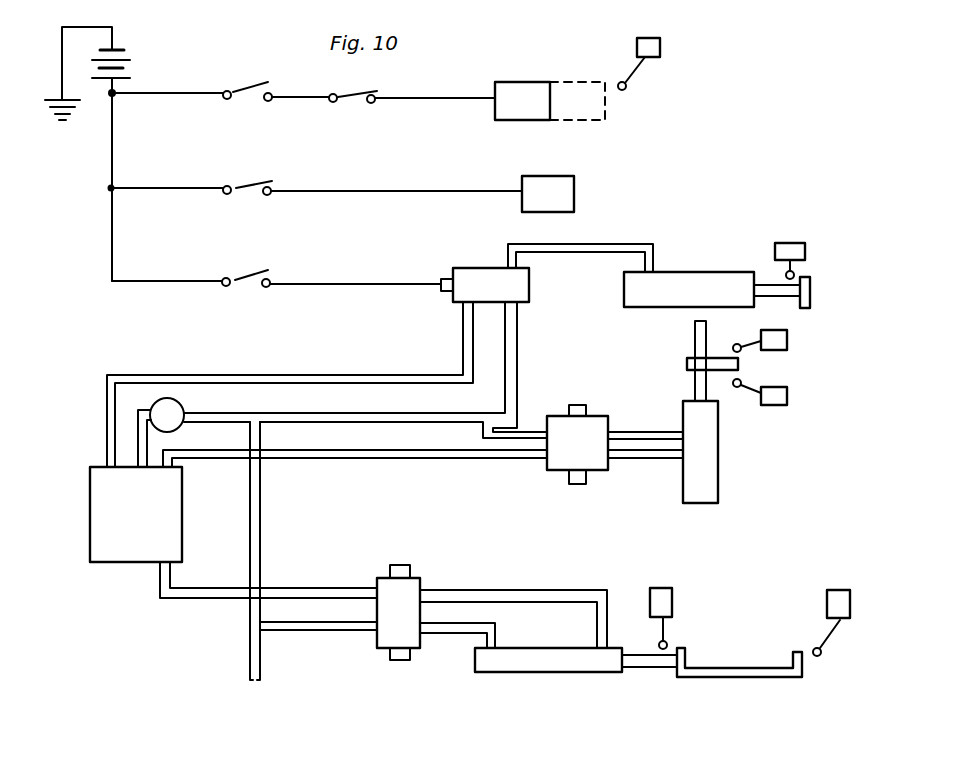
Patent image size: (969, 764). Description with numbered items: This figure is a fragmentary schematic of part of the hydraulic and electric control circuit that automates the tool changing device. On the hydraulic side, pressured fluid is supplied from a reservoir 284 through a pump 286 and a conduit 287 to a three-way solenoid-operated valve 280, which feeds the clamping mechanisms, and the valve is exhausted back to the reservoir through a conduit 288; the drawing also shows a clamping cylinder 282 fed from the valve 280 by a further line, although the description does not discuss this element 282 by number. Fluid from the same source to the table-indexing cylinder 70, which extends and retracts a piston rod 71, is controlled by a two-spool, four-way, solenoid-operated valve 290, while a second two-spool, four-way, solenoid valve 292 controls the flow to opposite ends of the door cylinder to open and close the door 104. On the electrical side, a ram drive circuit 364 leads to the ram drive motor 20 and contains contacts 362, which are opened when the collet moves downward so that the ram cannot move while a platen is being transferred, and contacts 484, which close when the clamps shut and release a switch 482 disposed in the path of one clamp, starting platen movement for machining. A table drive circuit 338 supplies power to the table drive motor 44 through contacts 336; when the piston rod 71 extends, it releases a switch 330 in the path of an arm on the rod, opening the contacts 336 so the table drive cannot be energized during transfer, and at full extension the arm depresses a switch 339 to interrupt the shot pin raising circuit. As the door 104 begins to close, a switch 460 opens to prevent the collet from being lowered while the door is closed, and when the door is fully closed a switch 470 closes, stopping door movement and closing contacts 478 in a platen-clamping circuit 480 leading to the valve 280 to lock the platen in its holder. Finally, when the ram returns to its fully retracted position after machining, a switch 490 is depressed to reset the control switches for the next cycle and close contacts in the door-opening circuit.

The drive motor 20 is at (531, 111).
The table drive motor 44 is at (577, 193).
The table-indexing cylinder 70 is at (713, 492).
The piston rod 71 is at (707, 388).
The door 104 is at (717, 677).
The three-way solenoid-operated valve 280 is at (487, 268).
The cylinder 282 is at (590, 244).
The reservoir 284 is at (112, 562).
The pump 286 is at (181, 398).
The conduit 287 is at (515, 357).
The conduit 288 is at (107, 410).
The two-spool, four-way, solenoid-operated valve 290 is at (592, 418).
The two-spool, four-way, solenoid valve 292 is at (377, 640).
The switch 330 is at (787, 398).
The contacts 336 is at (247, 192).
The table drive circuit 338 is at (142, 190).
The switch 339 is at (787, 338).
The contacts 362 is at (353, 98).
The ram drive circuit 364 is at (163, 95).
The switch 460 is at (670, 598).
The switch 470 is at (850, 612).
The contacts 478 is at (248, 284).
The platen-clamping circuit 480 is at (133, 280).
The switch 482 is at (787, 243).
The contacts 484 is at (257, 98).
The switch 490 is at (668, 64).